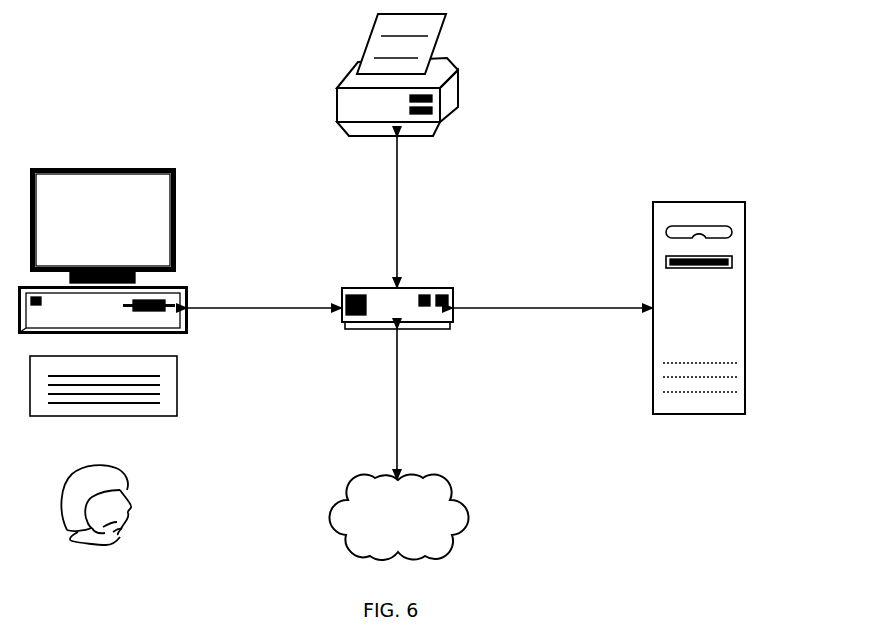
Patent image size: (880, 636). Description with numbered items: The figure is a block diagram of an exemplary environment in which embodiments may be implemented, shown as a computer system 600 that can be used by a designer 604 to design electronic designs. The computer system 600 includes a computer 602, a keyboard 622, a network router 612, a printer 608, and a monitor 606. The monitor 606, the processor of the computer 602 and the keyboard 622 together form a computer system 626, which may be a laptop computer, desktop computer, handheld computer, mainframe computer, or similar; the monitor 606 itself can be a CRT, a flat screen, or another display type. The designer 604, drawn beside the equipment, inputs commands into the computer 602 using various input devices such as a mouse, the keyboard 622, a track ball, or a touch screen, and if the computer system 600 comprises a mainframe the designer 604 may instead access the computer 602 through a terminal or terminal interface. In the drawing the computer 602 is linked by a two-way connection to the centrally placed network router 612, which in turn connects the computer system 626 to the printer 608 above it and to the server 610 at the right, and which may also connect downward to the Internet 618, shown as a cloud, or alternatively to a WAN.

The computer system 600 is at (644, 78).
The computer 602 is at (187, 288).
The designer 604 is at (123, 471).
The monitor 606 is at (178, 168).
The printer 608 is at (335, 115).
The server 610 is at (653, 398).
The network router 612 is at (427, 288).
The Internet 618 is at (430, 475).
The keyboard 622 is at (178, 381).
The computer system 626 is at (182, 216).